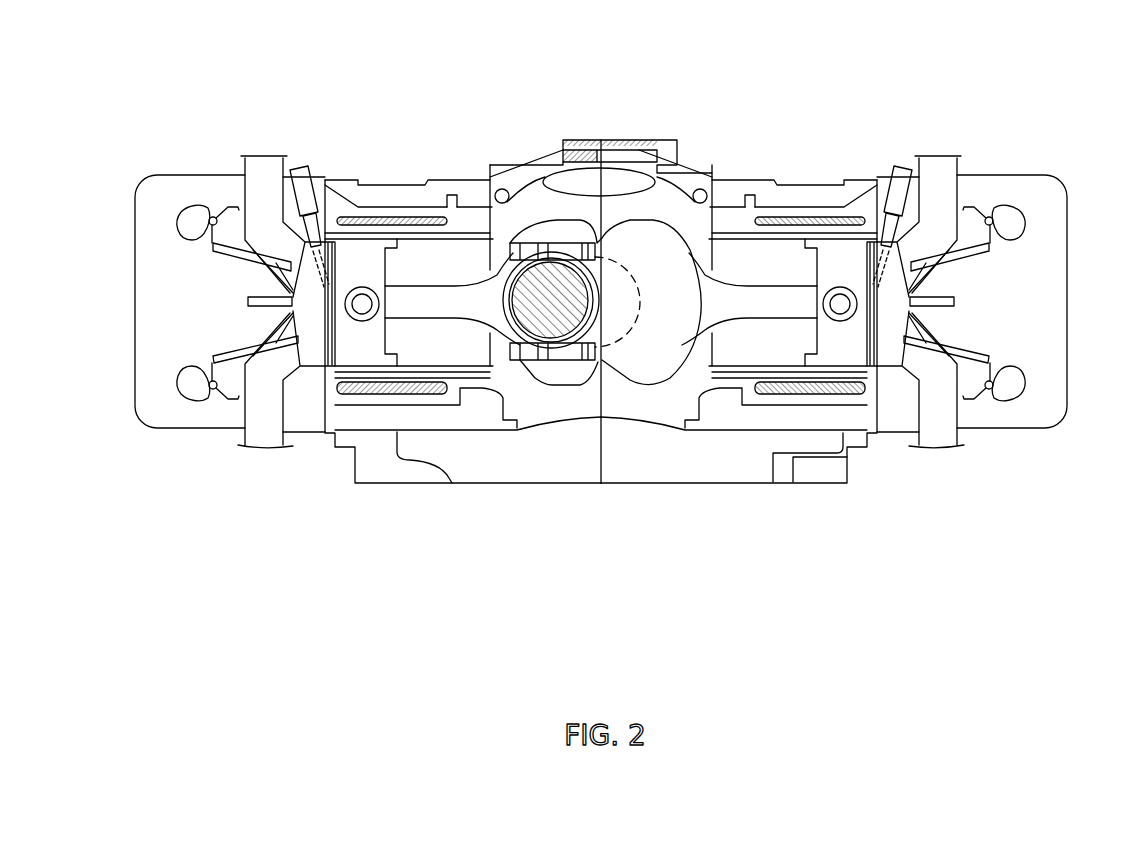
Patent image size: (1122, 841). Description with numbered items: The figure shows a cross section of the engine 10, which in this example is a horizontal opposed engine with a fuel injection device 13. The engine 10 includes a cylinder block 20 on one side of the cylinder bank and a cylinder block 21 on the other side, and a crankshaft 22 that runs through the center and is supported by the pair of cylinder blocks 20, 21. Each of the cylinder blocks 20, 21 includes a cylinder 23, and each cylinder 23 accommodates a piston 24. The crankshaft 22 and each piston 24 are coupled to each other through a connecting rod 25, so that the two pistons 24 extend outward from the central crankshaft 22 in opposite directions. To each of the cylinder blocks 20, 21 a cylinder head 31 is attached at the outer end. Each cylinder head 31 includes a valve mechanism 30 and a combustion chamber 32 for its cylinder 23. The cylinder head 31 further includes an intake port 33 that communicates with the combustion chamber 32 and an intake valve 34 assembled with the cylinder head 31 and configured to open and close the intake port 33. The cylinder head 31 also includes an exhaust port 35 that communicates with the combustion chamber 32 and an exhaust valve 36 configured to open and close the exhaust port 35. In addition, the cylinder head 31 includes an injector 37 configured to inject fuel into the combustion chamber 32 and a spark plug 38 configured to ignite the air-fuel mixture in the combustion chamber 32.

The engine 10 is at (207, 77).
The fuel injection device 13 is at (320, 162).
The cylinder block 20 is at (802, 186).
The cylinder block 21 is at (408, 180).
The crankshaft 22 is at (634, 390).
The cylinder 23 is at (478, 247).
The piston 24 is at (377, 331).
The connecting rod 25 is at (452, 297).
The valve mechanism 30 is at (182, 293).
The cylinder head 31 is at (160, 172).
The combustion chamber 32 is at (314, 352).
The intake port 33 is at (268, 195).
The intake valve 34 is at (275, 272).
The exhaust port 35 is at (265, 417).
The exhaust valve 36 is at (283, 335).
The injector 37 is at (303, 168).
The spark plug 38 is at (247, 301).